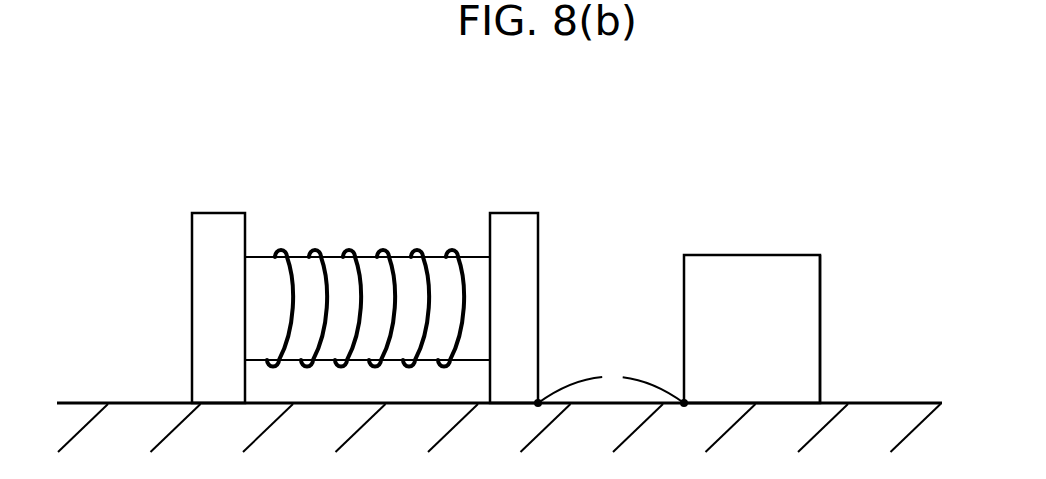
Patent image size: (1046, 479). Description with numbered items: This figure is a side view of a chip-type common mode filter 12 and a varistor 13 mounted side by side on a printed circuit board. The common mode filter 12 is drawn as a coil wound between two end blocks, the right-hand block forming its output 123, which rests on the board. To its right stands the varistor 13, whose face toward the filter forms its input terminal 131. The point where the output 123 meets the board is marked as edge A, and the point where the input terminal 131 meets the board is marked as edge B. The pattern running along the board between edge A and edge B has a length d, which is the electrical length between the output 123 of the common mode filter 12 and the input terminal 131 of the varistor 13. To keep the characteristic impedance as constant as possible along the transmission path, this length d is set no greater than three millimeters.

The common mode filter 12 is at (357, 183).
The output 123 is at (512, 212).
The varistor 13 is at (747, 205).
The input terminal 131 is at (807, 328).
The edge A is at (545, 395).
The edge B is at (680, 397).
The length d is at (611, 381).